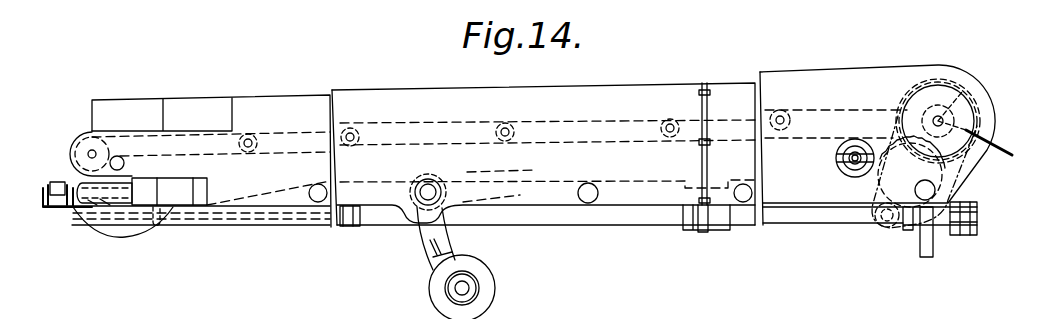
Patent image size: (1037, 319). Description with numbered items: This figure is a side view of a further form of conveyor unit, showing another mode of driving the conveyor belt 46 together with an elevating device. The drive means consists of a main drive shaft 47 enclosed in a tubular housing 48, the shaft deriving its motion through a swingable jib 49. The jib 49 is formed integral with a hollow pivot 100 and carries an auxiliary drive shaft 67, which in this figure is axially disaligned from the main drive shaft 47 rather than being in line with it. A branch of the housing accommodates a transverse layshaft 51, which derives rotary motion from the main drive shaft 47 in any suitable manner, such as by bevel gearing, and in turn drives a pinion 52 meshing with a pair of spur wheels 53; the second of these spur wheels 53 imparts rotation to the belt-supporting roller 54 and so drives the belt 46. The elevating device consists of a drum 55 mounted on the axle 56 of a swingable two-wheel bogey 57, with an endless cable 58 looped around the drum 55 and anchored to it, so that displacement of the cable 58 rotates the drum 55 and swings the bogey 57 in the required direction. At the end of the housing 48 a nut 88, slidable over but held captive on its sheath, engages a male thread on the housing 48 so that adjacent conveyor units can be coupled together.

The conveyor belt 46 is at (432, 123).
The main drive shaft 47 is at (241, 227).
The tubular housing 48 is at (373, 228).
The swingable jib 49 is at (118, 200).
The transverse layshaft 51 is at (887, 230).
The pinion 52 is at (874, 224).
The spur wheels 53 is at (889, 129).
The belt-supporting roller 54 is at (977, 84).
The drum 55 is at (428, 170).
The axle 56 is at (427, 193).
The swingable two-wheel bogey 57 is at (442, 272).
The endless cable 58 is at (509, 168).
The auxiliary drive shaft 67 is at (82, 214).
The nut 88 is at (58, 182).
The hollow pivot 100 is at (153, 190).